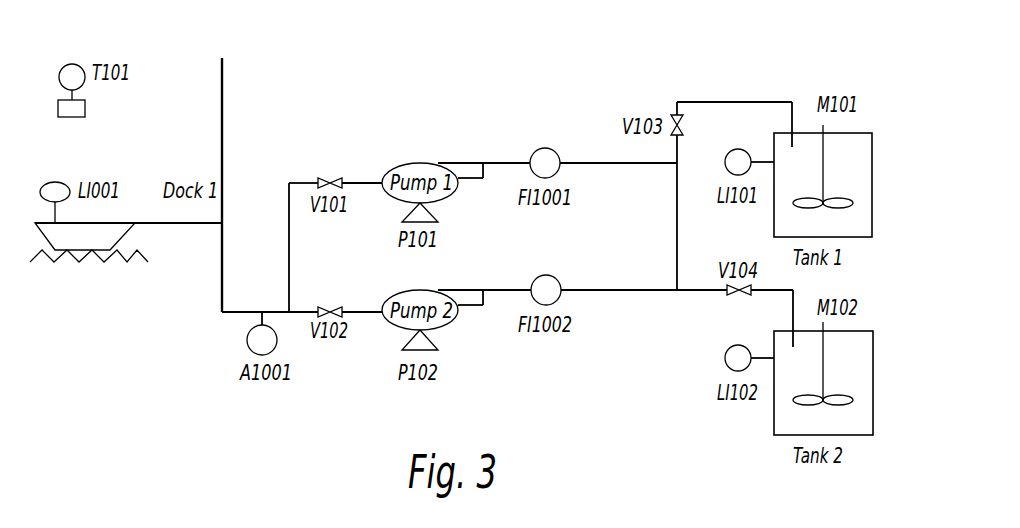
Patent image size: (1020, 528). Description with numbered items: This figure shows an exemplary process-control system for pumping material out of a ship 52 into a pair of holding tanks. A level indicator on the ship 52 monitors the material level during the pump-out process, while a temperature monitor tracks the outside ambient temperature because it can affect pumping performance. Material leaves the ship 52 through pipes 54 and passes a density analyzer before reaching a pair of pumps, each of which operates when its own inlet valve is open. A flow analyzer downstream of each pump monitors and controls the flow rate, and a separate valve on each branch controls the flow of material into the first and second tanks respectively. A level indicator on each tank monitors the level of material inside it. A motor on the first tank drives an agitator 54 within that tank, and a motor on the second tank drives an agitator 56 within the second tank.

The ship 52 is at (118, 233).
The pipes 54 is at (223, 235).
The agitator 56 is at (805, 406).